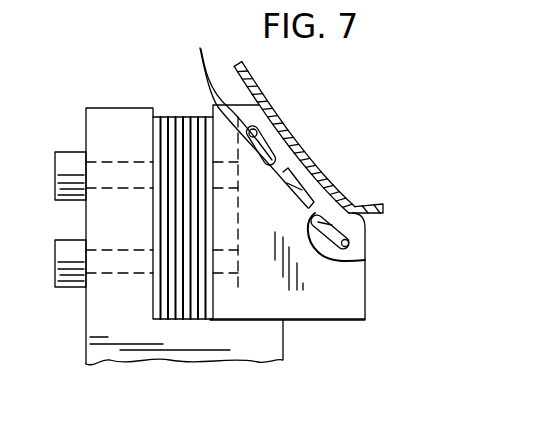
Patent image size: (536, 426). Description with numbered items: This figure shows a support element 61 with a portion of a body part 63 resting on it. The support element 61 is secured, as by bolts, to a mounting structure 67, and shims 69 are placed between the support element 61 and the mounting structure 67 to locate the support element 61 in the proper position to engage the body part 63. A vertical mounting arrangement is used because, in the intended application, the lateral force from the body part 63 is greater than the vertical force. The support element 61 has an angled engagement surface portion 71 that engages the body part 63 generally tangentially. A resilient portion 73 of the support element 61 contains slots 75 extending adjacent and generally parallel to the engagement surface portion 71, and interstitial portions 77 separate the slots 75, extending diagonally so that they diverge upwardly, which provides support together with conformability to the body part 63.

The support element 61 is at (335, 300).
The body part 63 is at (303, 150).
The mounting structure 67 is at (104, 120).
The shims 69 is at (170, 118).
The angled engagement surface portion 71 is at (330, 178).
The resilient portion 73 is at (258, 298).
The slots 75 is at (201, 48).
The interstitial portions 77 is at (273, 165).